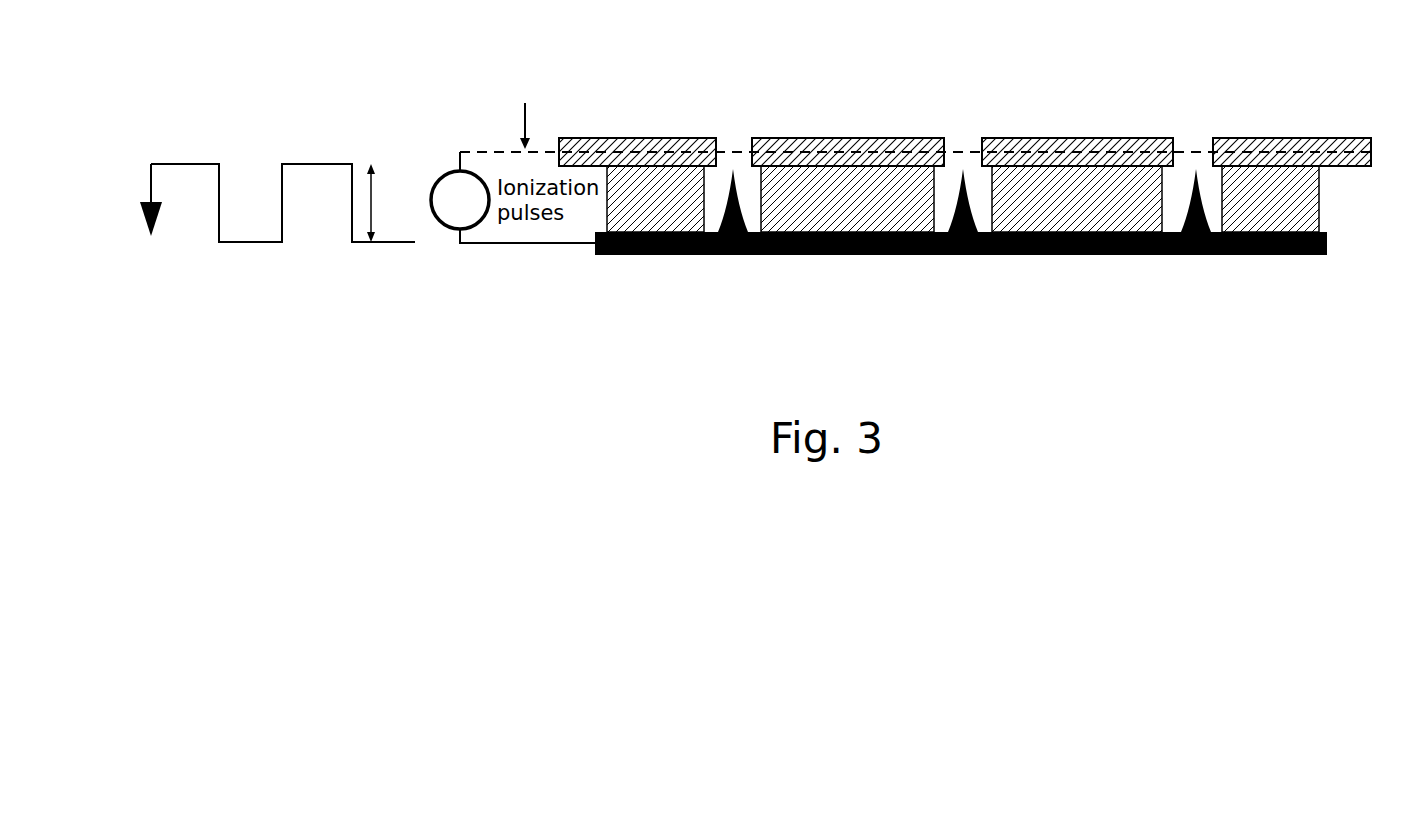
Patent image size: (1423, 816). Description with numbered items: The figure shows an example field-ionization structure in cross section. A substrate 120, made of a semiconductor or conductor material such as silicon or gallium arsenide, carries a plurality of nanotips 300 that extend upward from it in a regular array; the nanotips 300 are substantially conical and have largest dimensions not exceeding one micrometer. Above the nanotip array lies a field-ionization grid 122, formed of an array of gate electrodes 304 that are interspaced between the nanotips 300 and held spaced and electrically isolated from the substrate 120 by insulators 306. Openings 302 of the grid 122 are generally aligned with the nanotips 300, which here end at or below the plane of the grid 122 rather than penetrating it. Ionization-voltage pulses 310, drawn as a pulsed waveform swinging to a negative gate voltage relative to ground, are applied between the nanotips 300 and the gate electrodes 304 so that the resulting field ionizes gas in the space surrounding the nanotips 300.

The substrate 120 is at (1328, 243).
The field-ionization grid 122 is at (1371, 155).
The nanotips 300 is at (741, 201).
The openings 302 is at (721, 153).
The gate electrodes 304 is at (900, 139).
The insulators 306 is at (807, 210).
The ionization-voltage pulses 310 is at (316, 163).